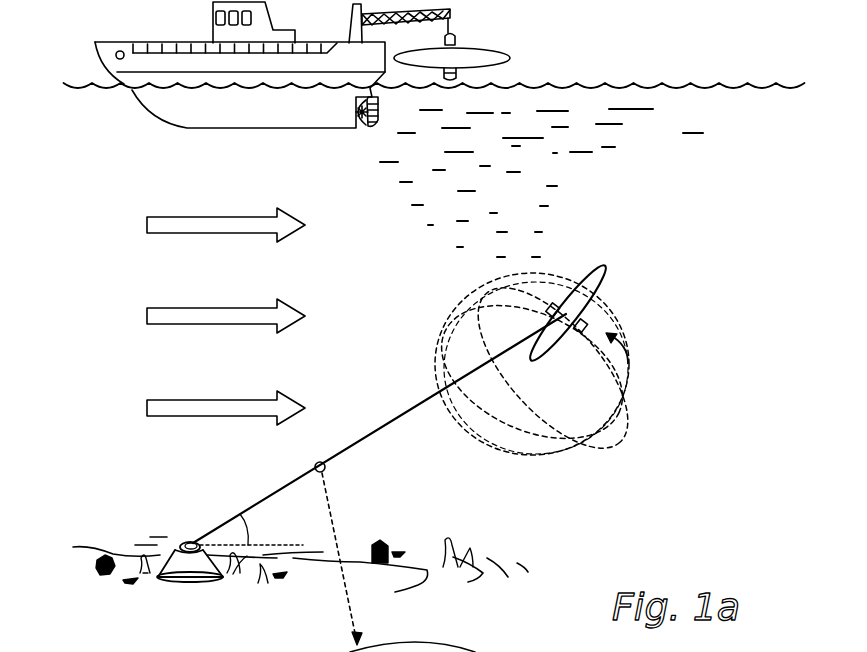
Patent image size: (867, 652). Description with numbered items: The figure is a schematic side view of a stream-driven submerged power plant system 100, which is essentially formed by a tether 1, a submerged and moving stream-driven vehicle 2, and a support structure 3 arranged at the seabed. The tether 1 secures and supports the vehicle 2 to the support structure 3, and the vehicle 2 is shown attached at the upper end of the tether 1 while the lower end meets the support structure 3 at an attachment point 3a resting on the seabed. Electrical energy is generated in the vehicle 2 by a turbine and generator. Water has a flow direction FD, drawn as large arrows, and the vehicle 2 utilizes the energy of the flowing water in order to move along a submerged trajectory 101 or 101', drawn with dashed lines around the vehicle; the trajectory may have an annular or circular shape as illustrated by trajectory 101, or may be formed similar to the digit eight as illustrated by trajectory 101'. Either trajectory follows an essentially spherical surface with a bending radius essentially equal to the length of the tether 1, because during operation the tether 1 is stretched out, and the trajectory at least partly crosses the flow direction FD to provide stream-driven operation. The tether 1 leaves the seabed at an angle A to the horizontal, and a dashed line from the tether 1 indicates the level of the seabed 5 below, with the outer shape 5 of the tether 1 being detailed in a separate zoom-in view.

The tether 1 is at (365, 443).
The stream-driven vehicle 2 is at (587, 306).
The support structure 3 is at (209, 550).
The anchor attachment point 3a is at (192, 541).
The outer shape 5 is at (301, 594).
The stream-driven submerged power plant system 100 is at (577, 387).
The submerged trajectory 101 is at (578, 368).
The submerged trajectory 101' is at (577, 372).
The flow direction FD is at (193, 222).
The angle A is at (251, 529).